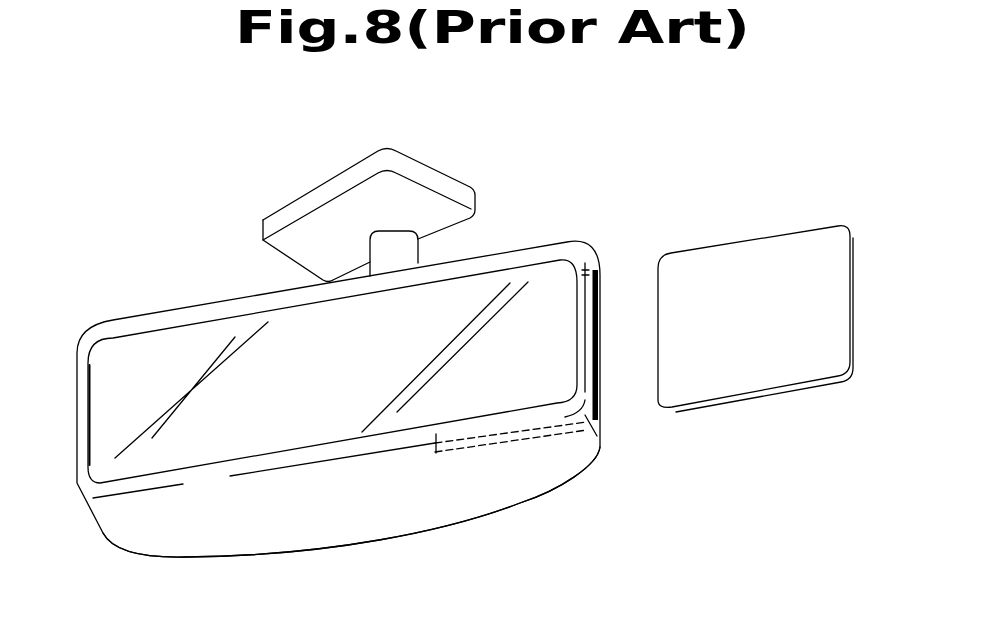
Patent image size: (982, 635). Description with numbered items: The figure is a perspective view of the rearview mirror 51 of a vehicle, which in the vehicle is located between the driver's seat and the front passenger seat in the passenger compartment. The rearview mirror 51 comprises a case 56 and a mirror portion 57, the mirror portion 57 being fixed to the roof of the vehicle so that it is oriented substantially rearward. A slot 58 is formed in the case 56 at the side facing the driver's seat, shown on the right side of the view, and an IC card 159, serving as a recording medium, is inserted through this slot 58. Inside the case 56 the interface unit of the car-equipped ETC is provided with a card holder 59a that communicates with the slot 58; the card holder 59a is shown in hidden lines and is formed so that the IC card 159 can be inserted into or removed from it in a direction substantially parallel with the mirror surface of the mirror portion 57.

The rearview mirror 51 is at (580, 173).
The case 56 is at (512, 497).
The mirror portion 57 is at (163, 343).
The slot 58 is at (653, 337).
The card holder 59a is at (463, 455).
The IC card 159 is at (790, 250).